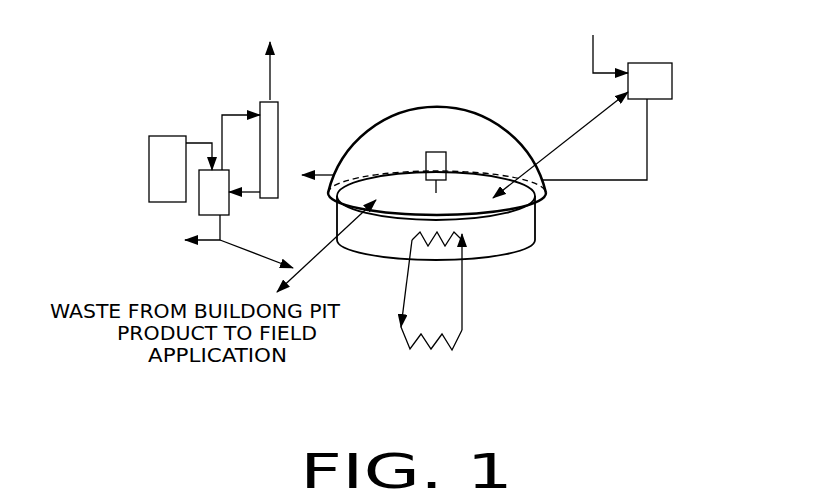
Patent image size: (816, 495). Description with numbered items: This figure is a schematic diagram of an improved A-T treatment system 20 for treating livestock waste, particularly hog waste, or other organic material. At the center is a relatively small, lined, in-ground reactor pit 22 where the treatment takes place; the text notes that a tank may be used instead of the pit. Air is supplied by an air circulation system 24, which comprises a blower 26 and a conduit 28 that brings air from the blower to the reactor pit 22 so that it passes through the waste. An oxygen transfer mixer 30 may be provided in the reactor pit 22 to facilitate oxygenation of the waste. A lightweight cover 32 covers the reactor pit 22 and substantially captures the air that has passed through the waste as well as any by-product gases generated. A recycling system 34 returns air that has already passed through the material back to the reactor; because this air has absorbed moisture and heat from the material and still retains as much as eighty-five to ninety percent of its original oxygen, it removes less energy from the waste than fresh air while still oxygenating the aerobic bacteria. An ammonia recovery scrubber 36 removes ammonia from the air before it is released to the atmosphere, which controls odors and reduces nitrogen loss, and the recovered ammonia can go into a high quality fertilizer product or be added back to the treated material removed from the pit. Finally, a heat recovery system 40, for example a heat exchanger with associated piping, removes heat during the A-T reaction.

The A-T treatment system 20 is at (598, 215).
The reactor pit 22 is at (452, 222).
The air circulation system 24 is at (690, 85).
The blower 26 is at (656, 80).
The conduit 28 is at (647, 152).
The oxygen transfer mixer 30 is at (437, 168).
The lightweight cover 32 is at (425, 105).
The recycling system 34 is at (580, 110).
The ammonia recovery scrubber 36 is at (212, 132).
The heat recovery system 40 is at (473, 322).